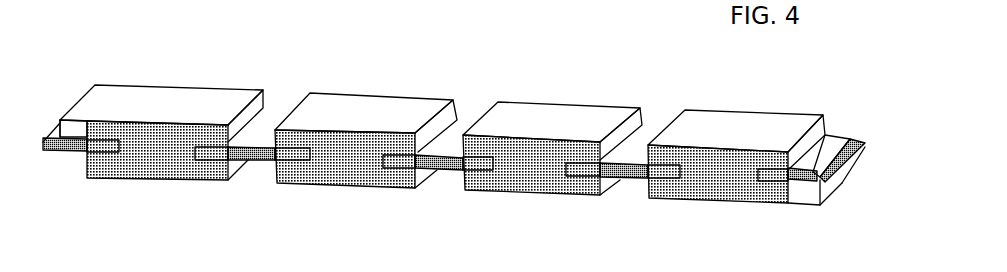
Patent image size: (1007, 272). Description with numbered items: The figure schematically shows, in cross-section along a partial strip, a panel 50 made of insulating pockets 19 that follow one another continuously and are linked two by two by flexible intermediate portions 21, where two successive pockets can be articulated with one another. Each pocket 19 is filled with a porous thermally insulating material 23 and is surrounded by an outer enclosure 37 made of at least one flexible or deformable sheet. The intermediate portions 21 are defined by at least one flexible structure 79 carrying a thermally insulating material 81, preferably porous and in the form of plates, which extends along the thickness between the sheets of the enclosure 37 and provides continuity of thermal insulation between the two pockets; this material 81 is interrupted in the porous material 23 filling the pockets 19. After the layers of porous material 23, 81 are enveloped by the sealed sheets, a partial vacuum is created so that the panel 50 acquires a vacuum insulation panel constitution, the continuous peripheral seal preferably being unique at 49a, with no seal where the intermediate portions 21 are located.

The insulating pocket 19 is at (186, 100).
The flexible intermediate portion 21 is at (643, 142).
The porous thermally insulating material 23 is at (163, 178).
The outer enclosure 37 is at (552, 123).
The seal 49a is at (53, 133).
The panel 50 is at (848, 98).
The flexible structure 79 is at (247, 163).
The thermally insulating material 81 is at (253, 140).